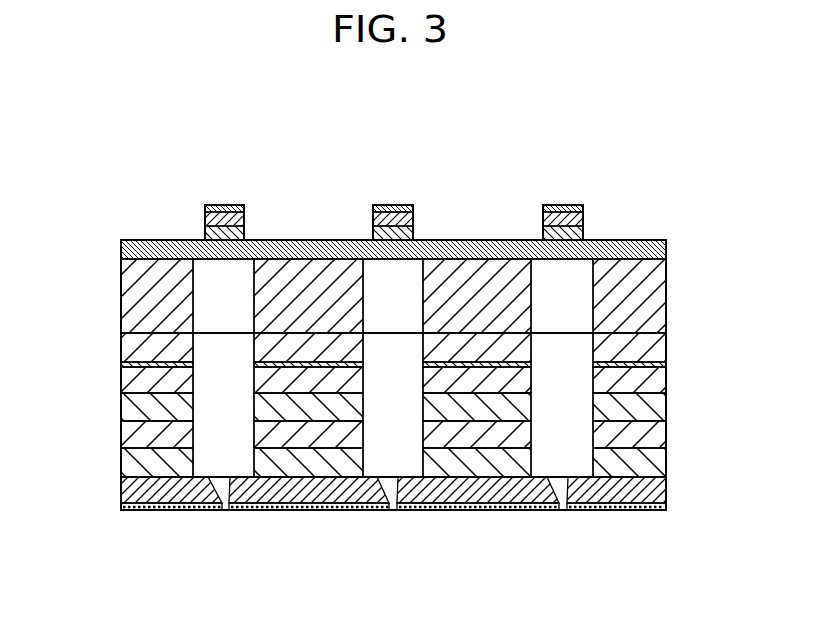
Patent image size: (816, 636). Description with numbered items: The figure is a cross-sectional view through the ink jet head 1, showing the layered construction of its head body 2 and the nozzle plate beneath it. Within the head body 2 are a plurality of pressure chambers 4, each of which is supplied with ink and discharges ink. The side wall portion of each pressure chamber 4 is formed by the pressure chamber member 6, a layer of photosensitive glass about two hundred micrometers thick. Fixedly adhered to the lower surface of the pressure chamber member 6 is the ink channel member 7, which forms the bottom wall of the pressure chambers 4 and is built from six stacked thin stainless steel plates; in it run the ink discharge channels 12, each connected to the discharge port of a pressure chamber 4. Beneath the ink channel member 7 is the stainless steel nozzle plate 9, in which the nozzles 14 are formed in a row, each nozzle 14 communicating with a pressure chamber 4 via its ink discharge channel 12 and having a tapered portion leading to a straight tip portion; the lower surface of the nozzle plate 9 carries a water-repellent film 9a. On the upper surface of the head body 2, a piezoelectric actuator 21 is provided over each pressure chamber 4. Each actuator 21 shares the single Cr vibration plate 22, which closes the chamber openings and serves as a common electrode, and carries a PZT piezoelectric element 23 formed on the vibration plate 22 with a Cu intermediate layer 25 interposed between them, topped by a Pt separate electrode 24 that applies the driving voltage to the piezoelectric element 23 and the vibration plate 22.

The ink jet head 1 is at (94, 104).
The head body 2 is at (87, 360).
The pressure chamber 4 is at (211, 311).
The pressure chamber member 6 is at (666, 292).
The ink channel member 7 is at (676, 336).
The nozzle plate 9 is at (666, 489).
The water-repellent film 9a is at (666, 508).
The ink discharge channel 12 is at (211, 422).
The nozzle 14 is at (223, 518).
The piezoelectric actuator 21 is at (222, 200).
The vibration plate 22 is at (666, 246).
The piezoelectric element 23 is at (248, 223).
The separate electrode 24 is at (244, 210).
The intermediate layer 25 is at (250, 238).